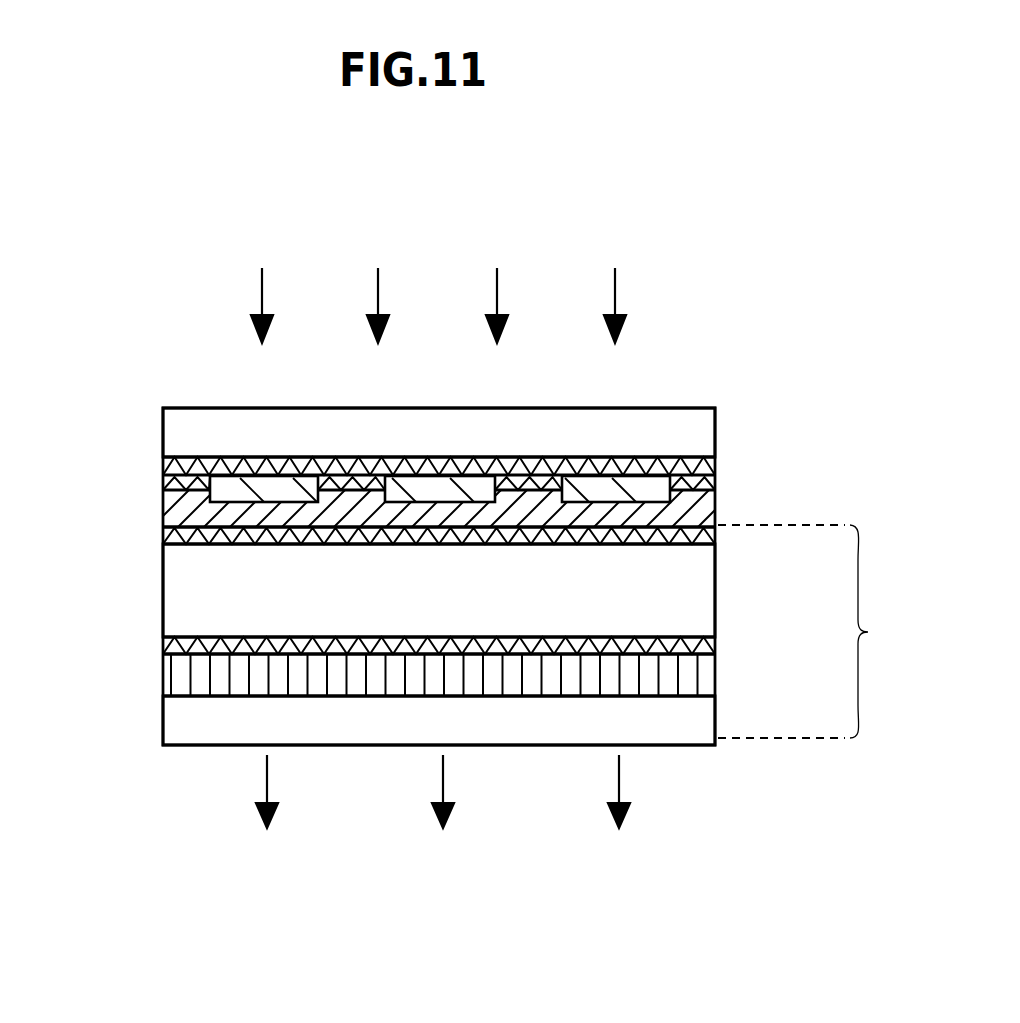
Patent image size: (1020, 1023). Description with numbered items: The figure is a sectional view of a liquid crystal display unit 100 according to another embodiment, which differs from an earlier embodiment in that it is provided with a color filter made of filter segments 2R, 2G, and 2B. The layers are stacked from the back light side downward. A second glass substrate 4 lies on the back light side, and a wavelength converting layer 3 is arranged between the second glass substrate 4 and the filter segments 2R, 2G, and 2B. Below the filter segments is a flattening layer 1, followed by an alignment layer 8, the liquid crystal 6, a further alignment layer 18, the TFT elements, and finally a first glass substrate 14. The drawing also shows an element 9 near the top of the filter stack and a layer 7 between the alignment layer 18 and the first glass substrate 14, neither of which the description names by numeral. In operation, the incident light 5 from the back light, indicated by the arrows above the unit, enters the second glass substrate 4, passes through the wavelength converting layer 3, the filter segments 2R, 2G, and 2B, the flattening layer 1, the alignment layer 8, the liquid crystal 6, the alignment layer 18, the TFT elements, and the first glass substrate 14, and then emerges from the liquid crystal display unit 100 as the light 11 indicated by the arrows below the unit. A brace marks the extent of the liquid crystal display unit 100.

The flattening layer 1 is at (716, 498).
The filter segment 2G is at (275, 487).
The filter segment 2R is at (442, 485).
The filter segment 2B is at (607, 487).
The wavelength converting layer 3 is at (525, 463).
The second glass substrate 4 is at (192, 437).
The incident light 5 is at (438, 274).
The liquid crystal 6 is at (698, 587).
The reflective electrode layer 7 is at (702, 673).
The alignment layer 8 is at (168, 534).
The overcoat layer 9 is at (716, 477).
The transmitted light 11 is at (443, 819).
The first glass substrate 14 is at (197, 722).
The alignment layer 18 is at (168, 645).
The liquid crystal display unit 100 is at (820, 631).